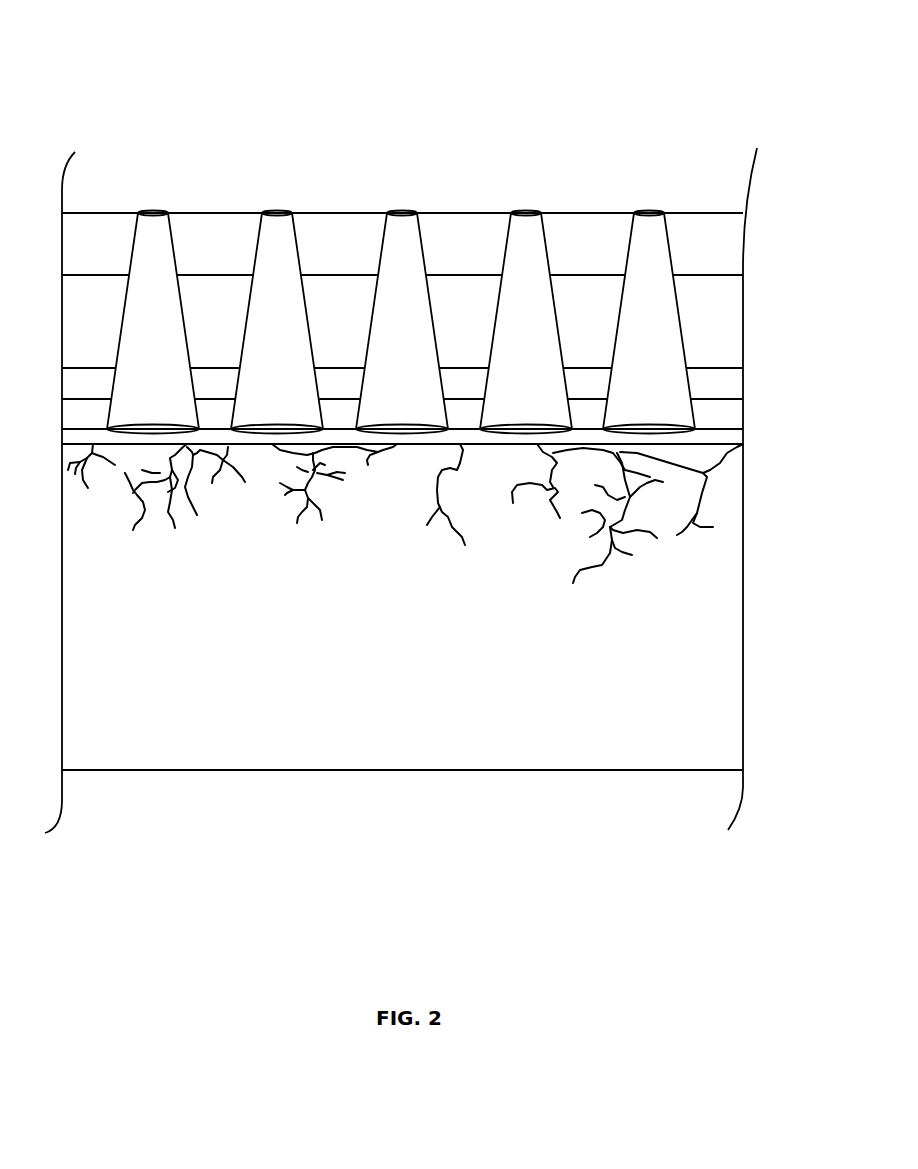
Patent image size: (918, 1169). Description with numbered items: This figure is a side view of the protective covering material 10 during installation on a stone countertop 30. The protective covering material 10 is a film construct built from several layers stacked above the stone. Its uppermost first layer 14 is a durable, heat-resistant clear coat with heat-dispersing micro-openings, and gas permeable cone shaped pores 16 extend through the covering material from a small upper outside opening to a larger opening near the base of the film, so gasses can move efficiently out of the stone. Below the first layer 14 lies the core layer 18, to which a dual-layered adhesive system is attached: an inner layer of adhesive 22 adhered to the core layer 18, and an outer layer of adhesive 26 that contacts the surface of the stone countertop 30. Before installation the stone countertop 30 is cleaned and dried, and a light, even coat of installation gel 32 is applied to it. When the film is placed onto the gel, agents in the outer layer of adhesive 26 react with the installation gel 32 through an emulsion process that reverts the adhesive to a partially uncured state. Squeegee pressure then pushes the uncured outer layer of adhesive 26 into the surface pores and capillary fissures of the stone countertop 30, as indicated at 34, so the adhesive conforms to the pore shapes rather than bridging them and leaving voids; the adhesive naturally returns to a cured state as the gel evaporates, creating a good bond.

The protective covering material 10 is at (412, 130).
The first layer 14 is at (722, 257).
The cone shaped pores 16 is at (156, 275).
The core layer 18 is at (722, 320).
The inner layer of adhesive 22 is at (722, 382).
The outer layer of adhesive 26 is at (722, 412).
The stone countertop 30 is at (725, 663).
The installation gel 32 is at (722, 437).
The adhesive filling surface pores and fissures 34 is at (712, 456).